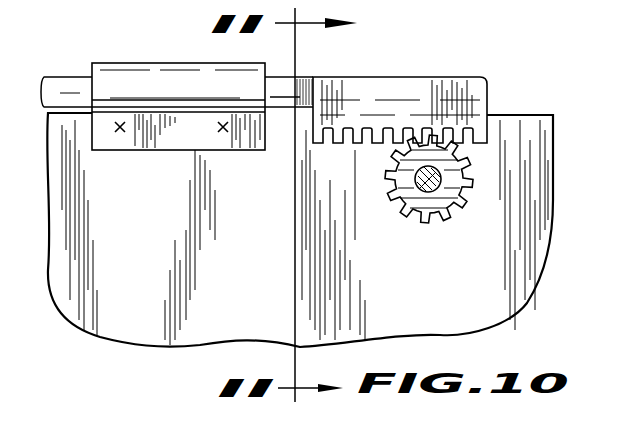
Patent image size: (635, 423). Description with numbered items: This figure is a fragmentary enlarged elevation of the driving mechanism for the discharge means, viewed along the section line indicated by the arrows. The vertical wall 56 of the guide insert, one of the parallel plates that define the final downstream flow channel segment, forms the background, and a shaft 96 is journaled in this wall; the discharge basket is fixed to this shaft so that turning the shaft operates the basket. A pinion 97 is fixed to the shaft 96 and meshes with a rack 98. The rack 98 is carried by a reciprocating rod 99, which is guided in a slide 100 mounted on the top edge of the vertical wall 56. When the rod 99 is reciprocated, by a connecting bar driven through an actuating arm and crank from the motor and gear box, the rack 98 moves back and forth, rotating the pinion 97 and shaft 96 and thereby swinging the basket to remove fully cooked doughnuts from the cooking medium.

The vertical wall 56 is at (248, 235).
The shaft 96 is at (435, 193).
The pinion 97 is at (458, 205).
The rack 98 is at (453, 87).
The reciprocating rod 99 is at (303, 78).
The slide 100 is at (143, 80).